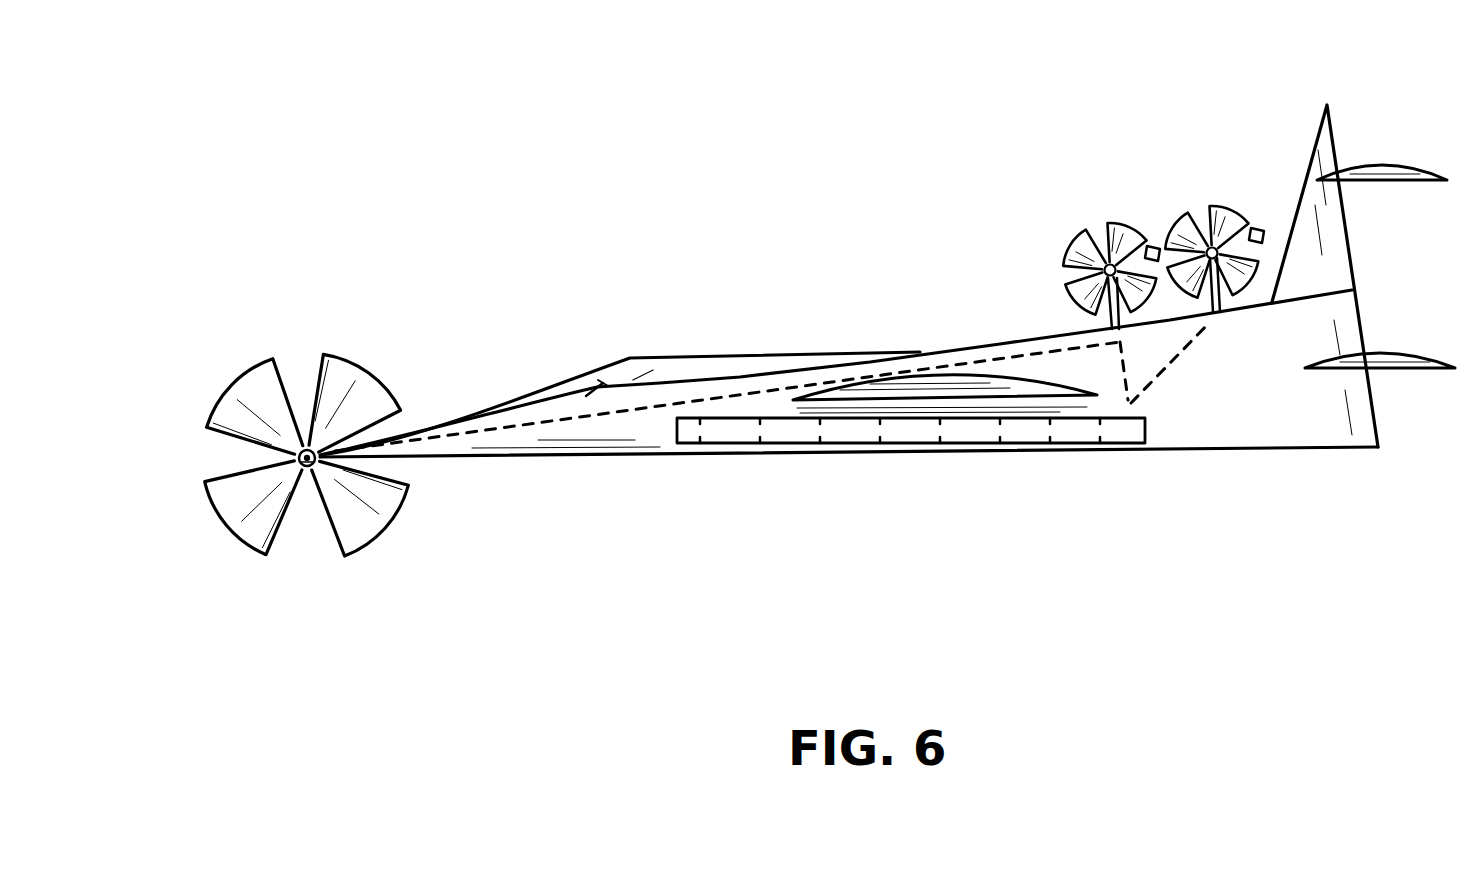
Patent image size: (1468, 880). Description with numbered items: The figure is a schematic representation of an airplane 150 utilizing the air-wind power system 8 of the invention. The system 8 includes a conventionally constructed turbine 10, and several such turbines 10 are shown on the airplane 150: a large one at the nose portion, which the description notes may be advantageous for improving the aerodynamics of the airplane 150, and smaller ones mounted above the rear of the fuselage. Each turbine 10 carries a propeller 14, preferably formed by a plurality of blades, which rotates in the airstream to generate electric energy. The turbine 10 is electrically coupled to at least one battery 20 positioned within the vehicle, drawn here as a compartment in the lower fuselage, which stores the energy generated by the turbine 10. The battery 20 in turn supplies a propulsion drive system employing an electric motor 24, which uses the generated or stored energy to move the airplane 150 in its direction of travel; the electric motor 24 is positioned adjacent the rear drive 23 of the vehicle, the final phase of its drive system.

The air-wind power system 8 is at (887, 310).
The turbine 10 is at (686, 348).
The propeller 14 is at (222, 518).
The battery 20 is at (857, 432).
The rear drive 23 is at (323, 375).
The electric motor 24 is at (306, 480).
The airplane 150 is at (1280, 432).